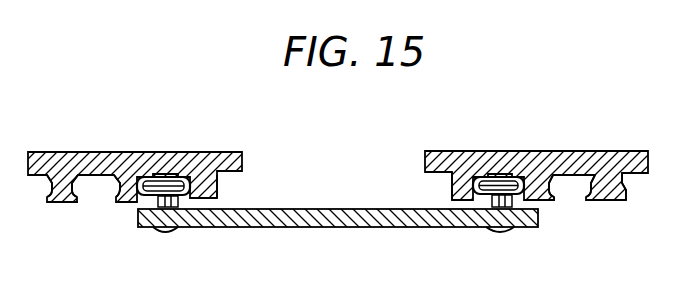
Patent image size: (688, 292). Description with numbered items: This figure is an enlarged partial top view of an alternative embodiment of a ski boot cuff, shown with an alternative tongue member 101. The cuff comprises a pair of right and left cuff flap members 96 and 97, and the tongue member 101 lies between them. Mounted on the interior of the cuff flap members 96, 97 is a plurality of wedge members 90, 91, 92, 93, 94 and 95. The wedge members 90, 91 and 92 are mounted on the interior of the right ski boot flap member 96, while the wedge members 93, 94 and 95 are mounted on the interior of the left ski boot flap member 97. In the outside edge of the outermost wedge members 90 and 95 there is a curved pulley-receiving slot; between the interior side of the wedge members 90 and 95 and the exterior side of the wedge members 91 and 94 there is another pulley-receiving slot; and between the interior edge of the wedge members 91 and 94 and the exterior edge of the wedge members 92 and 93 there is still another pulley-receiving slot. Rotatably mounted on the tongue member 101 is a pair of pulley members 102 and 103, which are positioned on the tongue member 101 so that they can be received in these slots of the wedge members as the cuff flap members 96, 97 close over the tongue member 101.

The wedge member 90 is at (613, 200).
The wedge member 91 is at (543, 201).
The wedge member 92 is at (452, 190).
The wedge member 93 is at (219, 193).
The wedge member 94 is at (133, 208).
The wedge member 95 is at (62, 203).
The right cuff flap member 96 is at (492, 153).
The left cuff flap member 97 is at (210, 152).
The tongue member 101 is at (352, 230).
The pulley member 102 is at (512, 178).
The pulley member 103 is at (150, 177).